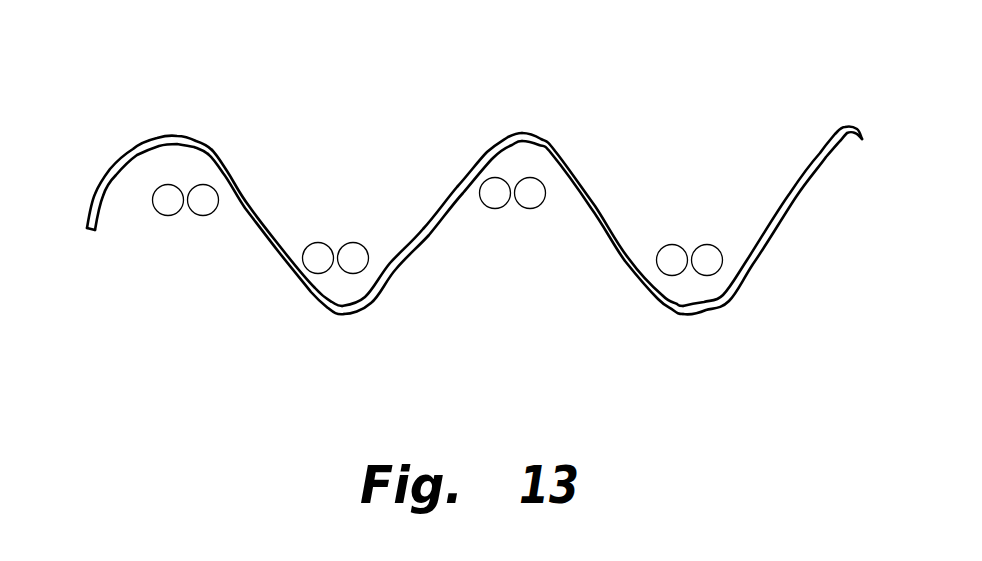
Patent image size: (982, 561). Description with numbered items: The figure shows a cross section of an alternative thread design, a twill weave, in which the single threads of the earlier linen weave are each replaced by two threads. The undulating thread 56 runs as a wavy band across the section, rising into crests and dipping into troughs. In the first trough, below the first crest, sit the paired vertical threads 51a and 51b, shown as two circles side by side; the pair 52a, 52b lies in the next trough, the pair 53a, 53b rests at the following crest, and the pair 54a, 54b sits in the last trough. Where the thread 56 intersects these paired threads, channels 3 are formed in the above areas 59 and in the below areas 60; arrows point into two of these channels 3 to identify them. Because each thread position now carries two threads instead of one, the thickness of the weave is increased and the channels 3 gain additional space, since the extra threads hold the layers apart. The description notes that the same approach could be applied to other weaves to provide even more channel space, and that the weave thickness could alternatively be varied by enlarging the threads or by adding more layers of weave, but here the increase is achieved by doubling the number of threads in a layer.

The channel 3 is at (474, 222).
The vertical thread 51a is at (170, 202).
The vertical thread 51b is at (205, 203).
The vertical thread 52a is at (316, 255).
The vertical thread 52b is at (354, 256).
The vertical thread 53a is at (497, 196).
The vertical thread 53b is at (532, 196).
The vertical thread 54a is at (669, 257).
The vertical thread 54b is at (711, 254).
The thread 56 is at (294, 276).
The above area 59 is at (797, 185).
The below area 60 is at (537, 298).